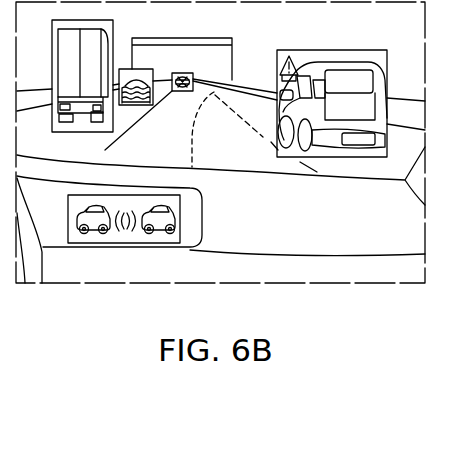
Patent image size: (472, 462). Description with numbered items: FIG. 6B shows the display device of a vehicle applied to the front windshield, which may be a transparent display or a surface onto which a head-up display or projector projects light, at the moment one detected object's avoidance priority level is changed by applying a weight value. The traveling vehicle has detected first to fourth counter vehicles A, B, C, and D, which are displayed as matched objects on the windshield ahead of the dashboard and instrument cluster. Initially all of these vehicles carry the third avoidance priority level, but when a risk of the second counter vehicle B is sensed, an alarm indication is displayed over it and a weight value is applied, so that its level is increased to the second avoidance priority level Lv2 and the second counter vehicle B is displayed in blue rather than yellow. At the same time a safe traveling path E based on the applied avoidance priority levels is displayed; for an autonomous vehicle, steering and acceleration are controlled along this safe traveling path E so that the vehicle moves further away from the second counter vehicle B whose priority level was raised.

The first counter vehicle A is at (74, 76).
The second counter vehicle B is at (340, 92).
The third counter vehicle C is at (136, 100).
The fourth counter vehicle D is at (181, 73).
The safe traveling path E is at (203, 129).
The second avoidance priority level Lv2 is at (332, 92).